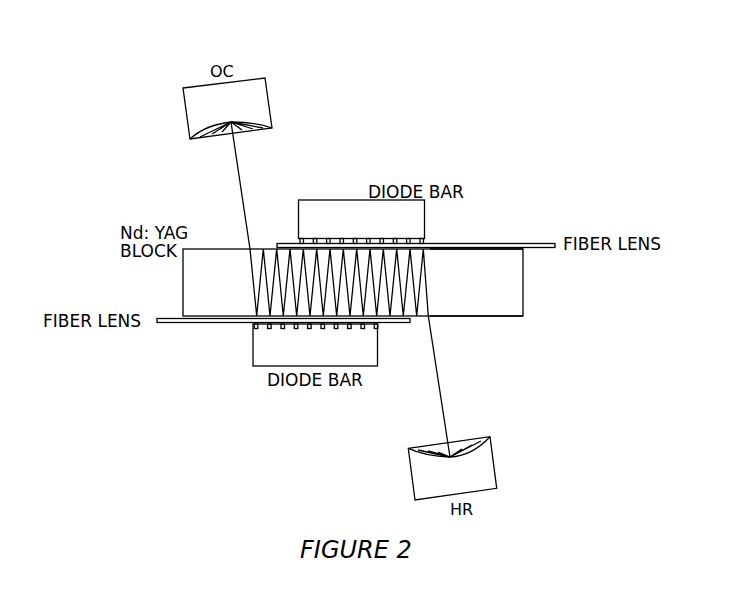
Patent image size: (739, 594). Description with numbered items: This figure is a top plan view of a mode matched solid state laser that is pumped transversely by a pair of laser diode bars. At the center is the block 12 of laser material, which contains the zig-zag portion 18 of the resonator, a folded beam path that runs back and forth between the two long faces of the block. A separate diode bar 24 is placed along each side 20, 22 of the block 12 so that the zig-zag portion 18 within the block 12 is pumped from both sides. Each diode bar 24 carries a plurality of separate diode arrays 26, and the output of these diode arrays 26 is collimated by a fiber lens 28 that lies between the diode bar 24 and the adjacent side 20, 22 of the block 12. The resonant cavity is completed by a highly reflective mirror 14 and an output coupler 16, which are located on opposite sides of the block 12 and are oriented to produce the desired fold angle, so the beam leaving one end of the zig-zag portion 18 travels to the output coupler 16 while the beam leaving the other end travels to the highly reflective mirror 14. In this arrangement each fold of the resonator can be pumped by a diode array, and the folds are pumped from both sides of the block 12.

The block of laser material 12 is at (183, 284).
The highly reflective mirror 14 is at (406, 452).
The output coupler 16 is at (182, 103).
The zig-zag portion of the resonator 18 is at (247, 275).
The side of block 20 is at (508, 257).
The side of block 22 is at (505, 315).
The diode bar 24 is at (305, 199).
The diode arrays 26 is at (315, 236).
The fiber lens 28 is at (184, 327).